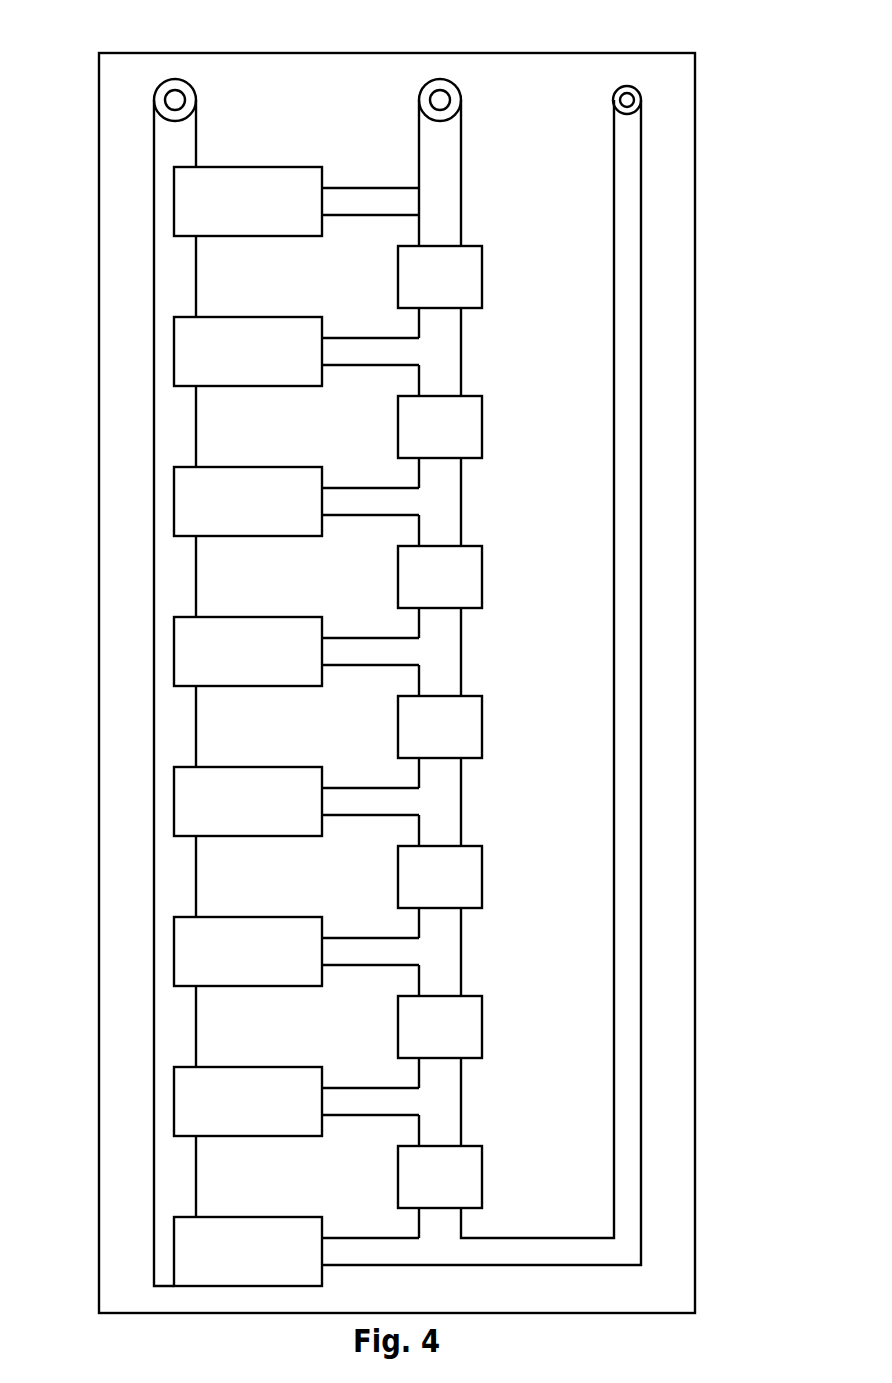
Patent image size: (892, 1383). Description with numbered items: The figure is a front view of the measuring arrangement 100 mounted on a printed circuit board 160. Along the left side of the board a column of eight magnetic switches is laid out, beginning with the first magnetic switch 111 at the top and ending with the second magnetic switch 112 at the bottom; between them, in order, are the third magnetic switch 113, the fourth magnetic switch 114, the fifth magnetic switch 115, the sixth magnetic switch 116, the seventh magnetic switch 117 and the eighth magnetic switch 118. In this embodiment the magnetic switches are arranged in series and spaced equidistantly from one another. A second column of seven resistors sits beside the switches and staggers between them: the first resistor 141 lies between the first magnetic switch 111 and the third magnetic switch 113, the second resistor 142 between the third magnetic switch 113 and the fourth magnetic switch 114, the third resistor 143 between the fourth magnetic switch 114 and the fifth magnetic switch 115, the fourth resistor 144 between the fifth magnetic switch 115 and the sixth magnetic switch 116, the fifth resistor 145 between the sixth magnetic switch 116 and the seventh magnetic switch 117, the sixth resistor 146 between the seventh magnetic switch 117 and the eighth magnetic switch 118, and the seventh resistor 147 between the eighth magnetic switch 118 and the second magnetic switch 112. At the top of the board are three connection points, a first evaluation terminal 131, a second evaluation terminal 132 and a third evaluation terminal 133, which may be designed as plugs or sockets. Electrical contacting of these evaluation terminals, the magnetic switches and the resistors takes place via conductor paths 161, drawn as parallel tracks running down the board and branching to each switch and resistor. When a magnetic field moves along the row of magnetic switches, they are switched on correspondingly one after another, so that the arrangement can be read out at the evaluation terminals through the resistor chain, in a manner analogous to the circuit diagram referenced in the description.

The measuring arrangement 100 is at (436, 656).
The printed circuit board 160 is at (687, 168).
The first evaluation terminal 131 is at (176, 86).
The second evaluation terminal 132 is at (440, 84).
The third evaluation terminal 133 is at (628, 88).
The conductor paths 161 is at (451, 203).
The first magnetic switch 111 is at (270, 217).
The second magnetic switch 112 is at (270, 1267).
The third magnetic switch 113 is at (270, 367).
The fourth magnetic switch 114 is at (270, 517).
The fifth magnetic switch 115 is at (270, 667).
The sixth magnetic switch 116 is at (270, 817).
The seventh magnetic switch 117 is at (270, 967).
The eighth magnetic switch 118 is at (270, 1117).
The first resistor 141 is at (419, 293).
The second resistor 142 is at (419, 443).
The third resistor 143 is at (419, 593).
The fourth resistor 144 is at (419, 743).
The fifth resistor 145 is at (419, 893).
The sixth resistor 146 is at (419, 1043).
The seventh resistor 147 is at (419, 1193).